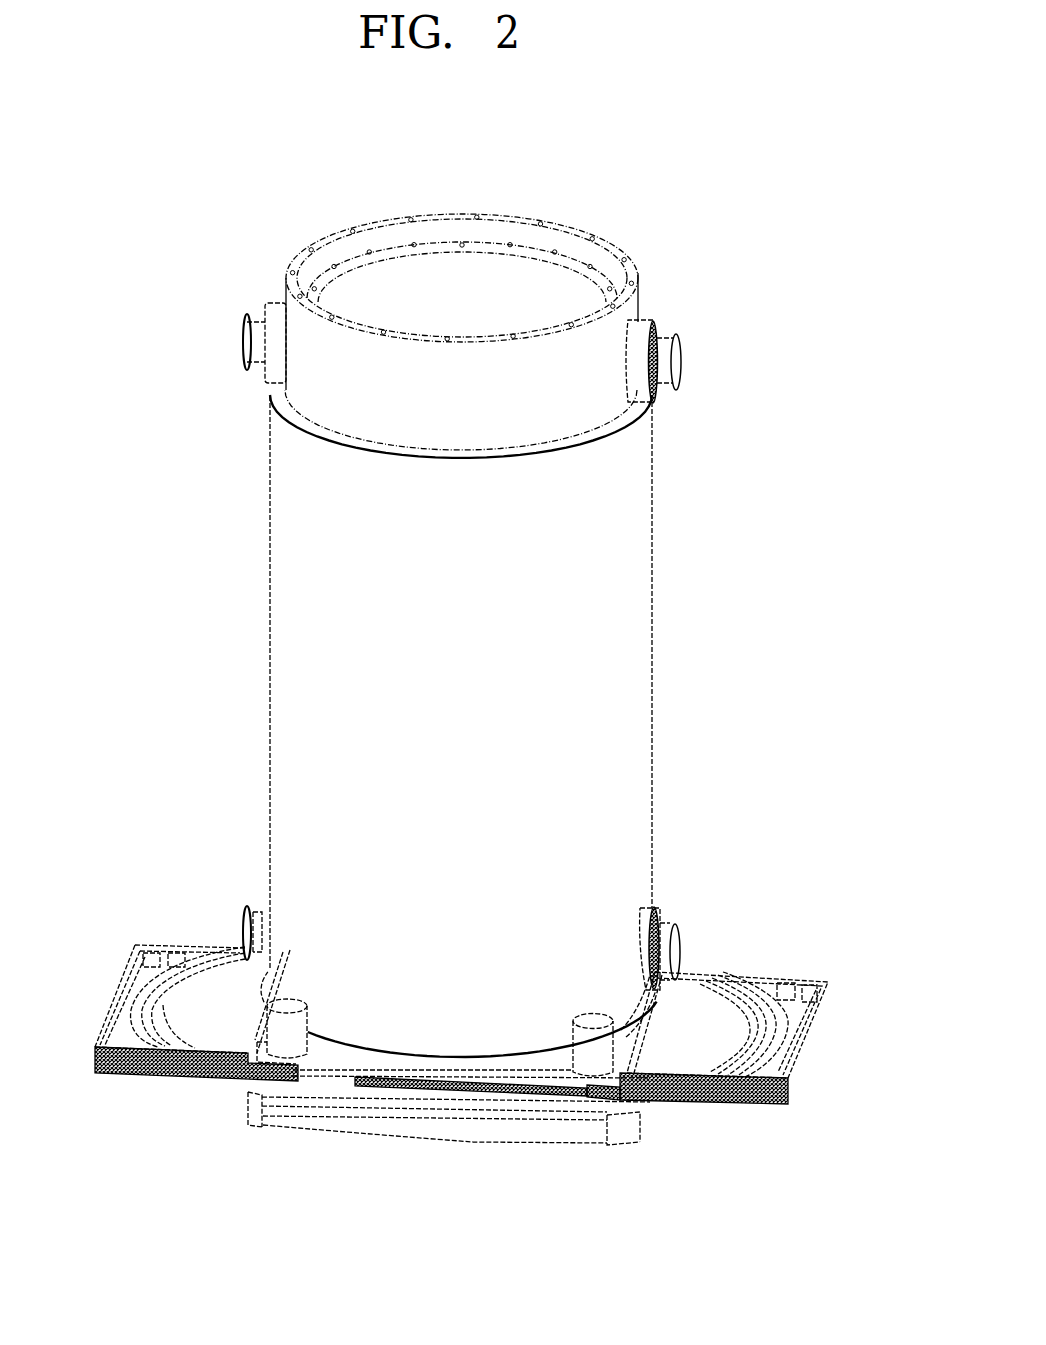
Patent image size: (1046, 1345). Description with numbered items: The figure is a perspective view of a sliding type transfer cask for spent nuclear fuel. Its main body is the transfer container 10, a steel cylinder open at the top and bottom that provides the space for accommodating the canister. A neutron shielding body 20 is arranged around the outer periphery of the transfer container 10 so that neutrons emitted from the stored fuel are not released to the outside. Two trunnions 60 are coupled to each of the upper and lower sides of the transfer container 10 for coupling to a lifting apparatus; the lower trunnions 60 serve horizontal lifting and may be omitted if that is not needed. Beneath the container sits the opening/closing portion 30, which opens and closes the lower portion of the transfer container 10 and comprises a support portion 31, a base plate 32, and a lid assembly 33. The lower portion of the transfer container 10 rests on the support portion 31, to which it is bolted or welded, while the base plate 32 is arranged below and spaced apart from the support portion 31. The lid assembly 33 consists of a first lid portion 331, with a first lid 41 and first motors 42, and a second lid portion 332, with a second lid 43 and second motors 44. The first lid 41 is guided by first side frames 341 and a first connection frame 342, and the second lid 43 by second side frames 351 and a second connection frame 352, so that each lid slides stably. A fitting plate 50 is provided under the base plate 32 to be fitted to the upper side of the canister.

The transfer container 10 is at (580, 401).
The neutron shielding body 20 is at (635, 680).
The opening/closing portion 30 is at (103, 700).
The support portion 31 is at (555, 1062).
The base plate 32 is at (385, 1097).
The lid assembly 33 is at (102, 584).
The first lid portion 331 is at (262, 1195).
The second lid portion 332 is at (733, 1205).
The first lid 41 is at (200, 1027).
The first motors 42 is at (285, 1035).
The second lid 43 is at (707, 1047).
The second motors 44 is at (598, 1053).
The fitting plate 50 is at (475, 1127).
The trunnions 60 is at (268, 345).
The first side frames 341 is at (170, 945).
The first connection frame 342 is at (105, 1027).
The second side frames 351 is at (790, 977).
The second connection frame 352 is at (797, 1060).